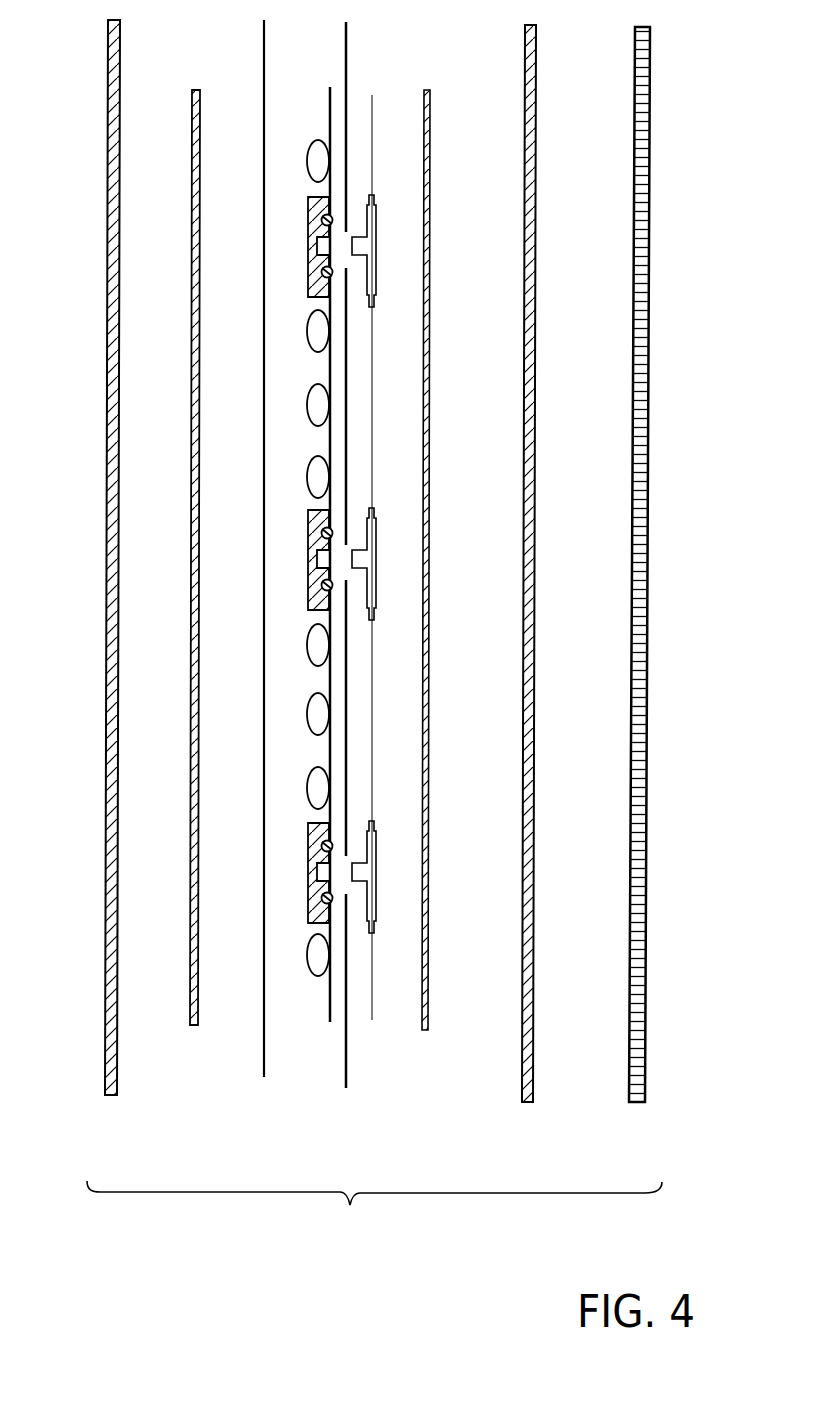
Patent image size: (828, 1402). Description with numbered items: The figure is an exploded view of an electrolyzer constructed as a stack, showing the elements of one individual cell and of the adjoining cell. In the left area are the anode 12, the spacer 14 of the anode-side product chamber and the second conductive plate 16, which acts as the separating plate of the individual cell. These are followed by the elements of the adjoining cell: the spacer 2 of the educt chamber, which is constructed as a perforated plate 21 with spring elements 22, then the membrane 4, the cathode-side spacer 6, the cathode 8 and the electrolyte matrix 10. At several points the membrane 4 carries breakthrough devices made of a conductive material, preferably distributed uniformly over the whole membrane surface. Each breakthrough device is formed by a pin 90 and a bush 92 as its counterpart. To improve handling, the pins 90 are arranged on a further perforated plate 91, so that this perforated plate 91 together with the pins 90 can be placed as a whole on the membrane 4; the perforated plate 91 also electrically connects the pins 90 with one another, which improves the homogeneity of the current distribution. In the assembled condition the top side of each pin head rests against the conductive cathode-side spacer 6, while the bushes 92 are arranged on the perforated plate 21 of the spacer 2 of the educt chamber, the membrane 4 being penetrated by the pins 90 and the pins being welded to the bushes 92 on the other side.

The spacer 2 is at (308, 1002).
The membrane 4 is at (347, 48).
The cathode-side spacer 6 is at (430, 112).
The cathode 8 is at (523, 1060).
The electrolyte matrix 10 is at (630, 1078).
The anode 12 is at (118, 1076).
The spacer of the anode-side product chamber 14 is at (196, 90).
The second conductive plate 16 is at (264, 1078).
The perforated plate 21 is at (330, 87).
The spring elements 22 is at (318, 141).
The pin 90 is at (372, 206).
The perforated plate 91 is at (371, 1015).
The bush 92 is at (308, 281).